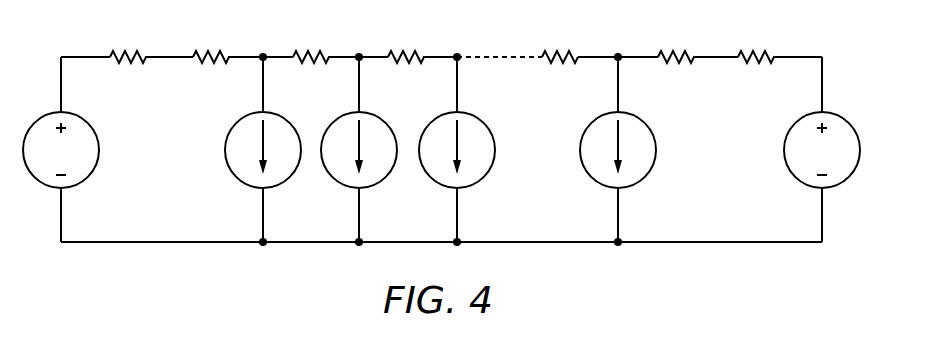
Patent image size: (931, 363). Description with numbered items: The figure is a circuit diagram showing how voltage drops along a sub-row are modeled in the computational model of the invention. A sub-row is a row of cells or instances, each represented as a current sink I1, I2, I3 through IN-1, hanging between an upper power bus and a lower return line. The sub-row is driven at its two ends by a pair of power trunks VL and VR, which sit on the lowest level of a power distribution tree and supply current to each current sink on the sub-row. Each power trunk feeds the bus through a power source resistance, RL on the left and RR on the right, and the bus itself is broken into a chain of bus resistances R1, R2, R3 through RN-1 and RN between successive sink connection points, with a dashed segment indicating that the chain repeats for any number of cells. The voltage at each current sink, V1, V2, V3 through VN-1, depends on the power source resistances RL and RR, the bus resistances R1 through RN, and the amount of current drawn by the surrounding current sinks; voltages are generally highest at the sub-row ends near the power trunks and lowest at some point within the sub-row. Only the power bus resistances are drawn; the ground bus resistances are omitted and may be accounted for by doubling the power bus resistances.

The power source resistance RL is at (128, 38).
The bus resistance R1 is at (211, 38).
The bus resistance R2 is at (311, 38).
The bus resistance R3 is at (406, 38).
The bus resistance RN-1 is at (556, 38).
The bus resistance RN is at (677, 38).
The power source resistance RR is at (756, 38).
The voltage at current sink V1 is at (267, 37).
The voltage at current sink V2 is at (363, 37).
The voltage at current sink V3 is at (460, 37).
The voltage at current sink VN-1 is at (618, 37).
The power trunk VL is at (61, 165).
The power trunk VR is at (822, 165).
The current sink I1 is at (263, 165).
The current sink I2 is at (359, 165).
The current sink I3 is at (457, 165).
The current sink IN-1 is at (613, 165).